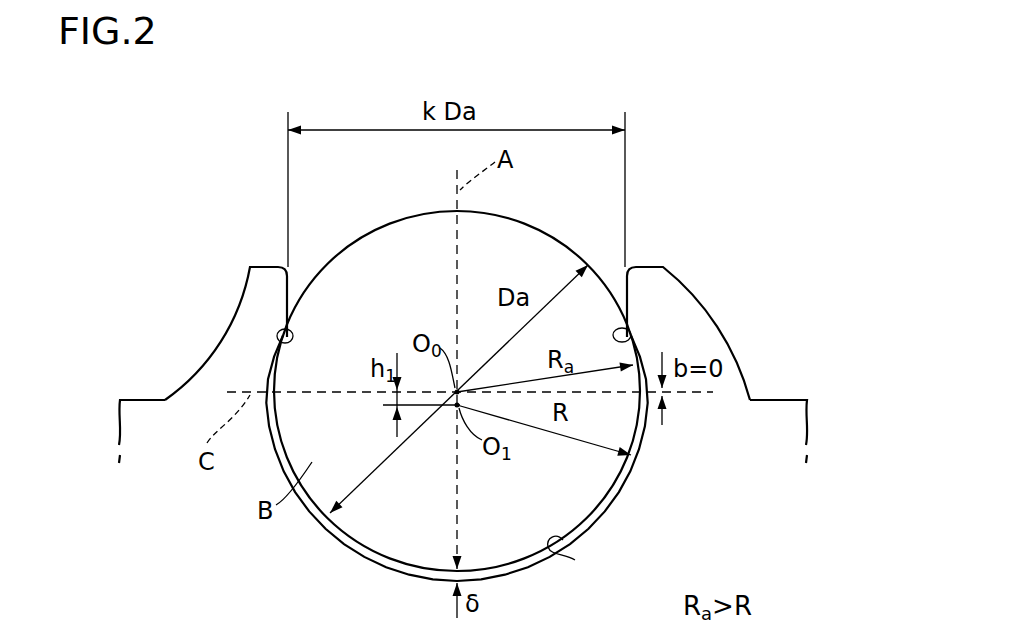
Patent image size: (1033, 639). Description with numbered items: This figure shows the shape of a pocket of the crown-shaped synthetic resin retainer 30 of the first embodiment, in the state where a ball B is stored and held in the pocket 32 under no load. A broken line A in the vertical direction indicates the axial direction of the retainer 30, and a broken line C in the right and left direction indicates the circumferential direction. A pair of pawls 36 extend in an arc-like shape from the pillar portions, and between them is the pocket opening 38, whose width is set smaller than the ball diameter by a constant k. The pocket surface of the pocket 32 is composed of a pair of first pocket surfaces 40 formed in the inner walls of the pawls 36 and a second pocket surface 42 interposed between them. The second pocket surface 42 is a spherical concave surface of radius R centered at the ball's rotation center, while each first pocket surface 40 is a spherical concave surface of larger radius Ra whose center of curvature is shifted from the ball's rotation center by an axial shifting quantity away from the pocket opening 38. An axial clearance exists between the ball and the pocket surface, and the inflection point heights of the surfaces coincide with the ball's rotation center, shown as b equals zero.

The retainer 30 is at (443, 345).
The pocket 32 is at (402, 560).
The pawl 36 is at (250, 287).
The pocket opening 38 is at (621, 327).
The first pocket surface 40 is at (273, 343).
The second pocket surface 42 is at (563, 540).